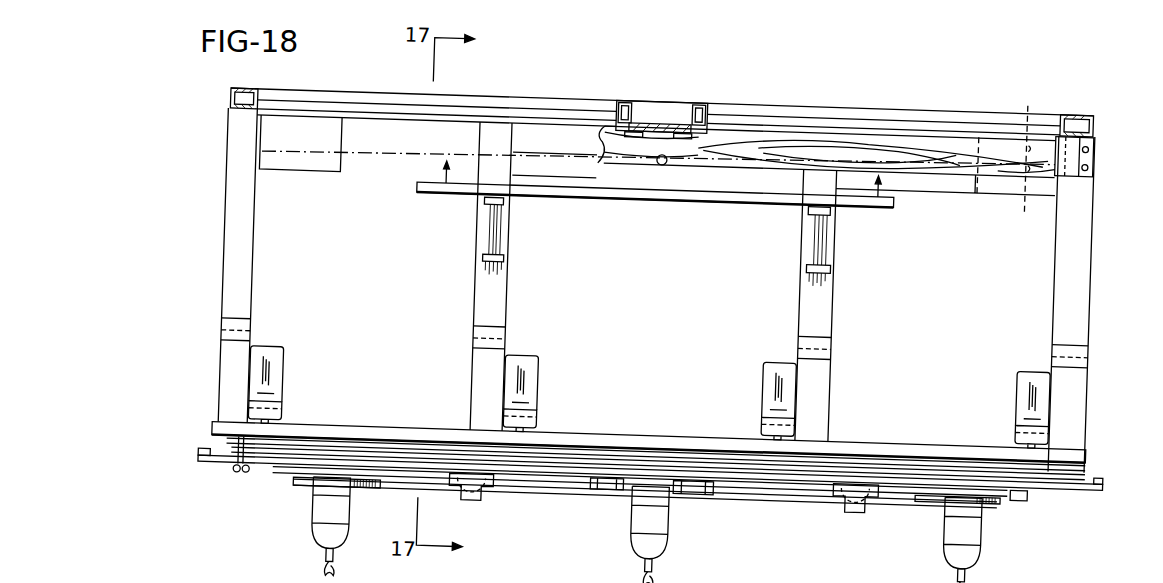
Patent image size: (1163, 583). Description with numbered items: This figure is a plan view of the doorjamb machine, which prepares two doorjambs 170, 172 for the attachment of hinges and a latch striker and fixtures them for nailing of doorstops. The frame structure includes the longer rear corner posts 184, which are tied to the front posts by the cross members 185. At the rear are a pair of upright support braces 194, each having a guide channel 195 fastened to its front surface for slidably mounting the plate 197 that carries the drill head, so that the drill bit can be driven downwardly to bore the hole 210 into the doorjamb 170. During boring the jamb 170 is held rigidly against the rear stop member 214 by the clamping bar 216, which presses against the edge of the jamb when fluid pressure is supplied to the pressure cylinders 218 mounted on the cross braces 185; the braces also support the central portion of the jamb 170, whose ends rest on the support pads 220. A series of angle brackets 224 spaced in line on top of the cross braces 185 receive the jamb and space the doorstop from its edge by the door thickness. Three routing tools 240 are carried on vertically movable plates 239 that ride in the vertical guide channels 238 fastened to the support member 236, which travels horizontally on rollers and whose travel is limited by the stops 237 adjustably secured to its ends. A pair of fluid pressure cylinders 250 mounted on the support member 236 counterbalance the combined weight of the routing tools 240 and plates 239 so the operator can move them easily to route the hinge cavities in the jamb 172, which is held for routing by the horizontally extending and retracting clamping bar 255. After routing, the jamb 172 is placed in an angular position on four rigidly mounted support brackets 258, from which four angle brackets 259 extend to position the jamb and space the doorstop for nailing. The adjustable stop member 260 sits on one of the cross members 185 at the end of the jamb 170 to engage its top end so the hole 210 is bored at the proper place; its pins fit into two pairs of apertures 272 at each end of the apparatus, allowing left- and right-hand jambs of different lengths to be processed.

The doorjamb 170 is at (867, 115).
The doorjamb 172 is at (602, 443).
The rear corner post 184 is at (231, 96).
The cross member 185 is at (233, 231).
The upright support brace 194 is at (646, 109).
The guide channel 195 is at (626, 122).
The mounting plate 197 is at (656, 111).
The hole 210 is at (668, 150).
The rear stop member 214 is at (545, 98).
The clamping bar 216 is at (633, 186).
The pressure cylinder 218 is at (494, 224).
The support pad 220 is at (262, 164).
The angle bracket 224 is at (236, 333).
The support member 236 is at (225, 466).
The stop 237 is at (212, 453).
The guide channel 238 is at (613, 478).
The plate 239 is at (385, 483).
The routing tool 240 is at (332, 509).
The fluid pressure cylinder 250 is at (481, 492).
The clamping bar 255 is at (371, 426).
The support bracket 258 is at (271, 371).
The angle bracket 259 is at (265, 409).
The adjustable stop member 260 is at (1097, 131).
The aperture 272 is at (1009, 165).